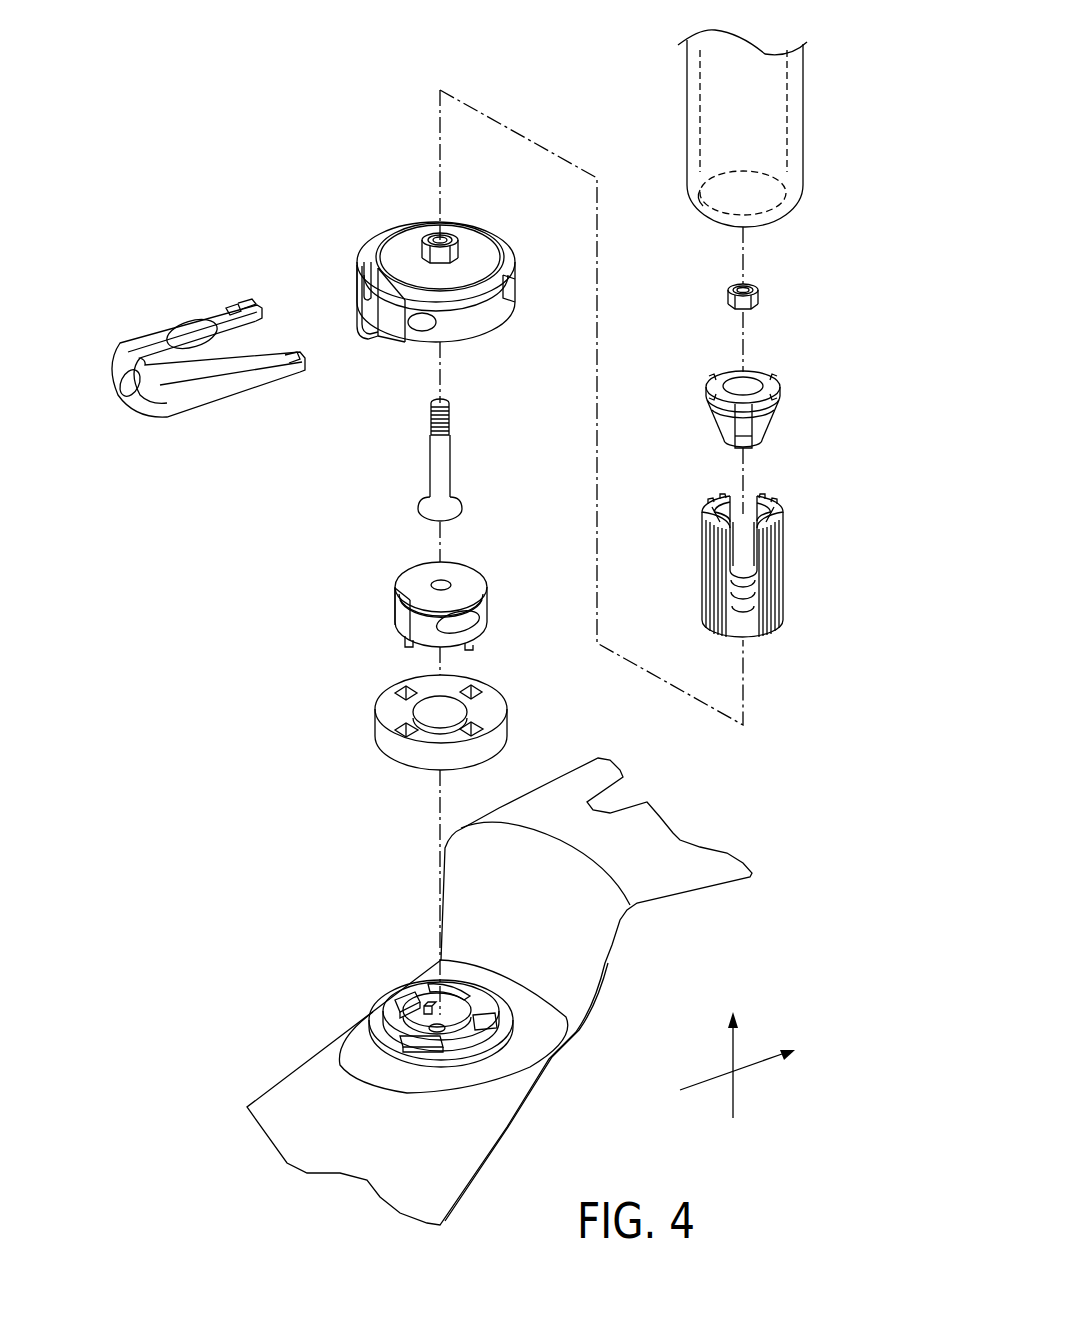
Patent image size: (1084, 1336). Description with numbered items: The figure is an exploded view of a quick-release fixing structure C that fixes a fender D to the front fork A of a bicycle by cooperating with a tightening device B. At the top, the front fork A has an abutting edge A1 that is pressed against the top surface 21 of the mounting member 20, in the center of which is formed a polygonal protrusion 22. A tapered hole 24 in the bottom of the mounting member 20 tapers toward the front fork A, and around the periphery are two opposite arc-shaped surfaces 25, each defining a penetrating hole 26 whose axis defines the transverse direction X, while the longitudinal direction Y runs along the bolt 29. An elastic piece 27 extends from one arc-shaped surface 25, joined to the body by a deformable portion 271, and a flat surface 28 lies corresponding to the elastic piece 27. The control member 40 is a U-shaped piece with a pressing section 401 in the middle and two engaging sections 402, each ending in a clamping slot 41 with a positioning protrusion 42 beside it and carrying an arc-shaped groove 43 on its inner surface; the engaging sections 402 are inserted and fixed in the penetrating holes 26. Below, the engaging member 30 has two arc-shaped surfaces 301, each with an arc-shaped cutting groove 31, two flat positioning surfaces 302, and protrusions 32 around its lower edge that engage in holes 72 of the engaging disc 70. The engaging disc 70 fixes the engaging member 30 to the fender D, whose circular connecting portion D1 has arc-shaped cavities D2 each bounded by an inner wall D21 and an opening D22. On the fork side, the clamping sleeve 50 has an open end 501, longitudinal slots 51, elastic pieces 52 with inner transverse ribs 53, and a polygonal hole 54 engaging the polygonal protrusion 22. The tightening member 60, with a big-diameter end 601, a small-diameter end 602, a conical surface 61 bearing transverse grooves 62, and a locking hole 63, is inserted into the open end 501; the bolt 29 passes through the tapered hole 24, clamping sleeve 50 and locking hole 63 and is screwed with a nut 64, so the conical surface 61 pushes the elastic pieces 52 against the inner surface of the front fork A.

The mounting member 20 is at (428, 270).
The top surface 21 is at (506, 262).
The polygonal protrusion 22 is at (458, 246).
The tapered hole 24 is at (448, 228).
The arc-shaped surfaces 25 is at (487, 322).
The penetrating hole 26 is at (422, 326).
The elastic piece 27 is at (333, 280).
The deformable portion 271 is at (376, 270).
The flat surface 28 is at (393, 312).
The bolt 29 is at (430, 468).
The engaging member 30 is at (426, 579).
The arc-shaped surfaces 301 is at (425, 636).
The positioning surfaces 302 is at (400, 610).
The arc-shaped cutting groove 31 is at (476, 620).
The protrusions 32 is at (476, 641).
The control member 40 is at (201, 333).
The clamping slot 41 is at (251, 300).
The positioning protrusion 42 is at (236, 305).
The arc-shaped groove 43 is at (186, 333).
The pressing section 401 is at (138, 378).
The engaging sections 402 is at (150, 342).
The clamping sleeve 50 is at (756, 589).
The open end 501 is at (790, 501).
The longitudinal slots 51 is at (740, 498).
The elastic pieces 52 is at (712, 532).
The transverse ribs 53 is at (714, 510).
The polygonal hole 54 is at (752, 600).
The tightening member 60 is at (715, 396).
The big-diameter end 601 is at (766, 372).
The small-diameter end 602 is at (728, 444).
The conical surface 61 is at (782, 414).
The transverse grooves 62 is at (758, 422).
The locking hole 63 is at (735, 382).
The nut 64 is at (760, 296).
The engaging disc 70 is at (412, 767).
The holes 72 is at (412, 712).
The front fork A is at (688, 125).
The abutting edge A1 is at (700, 210).
The tightening device B is at (812, 437).
The quick-release fixing structure C is at (245, 558).
The fender D is at (472, 991).
The circular connecting portion D1 is at (395, 1020).
The arc-shaped cavities D2 is at (456, 986).
The inner wall D21 is at (484, 1002).
The opening D22 is at (420, 988).
The transverse direction X is at (748, 1064).
The longitudinal direction Y is at (732, 1050).